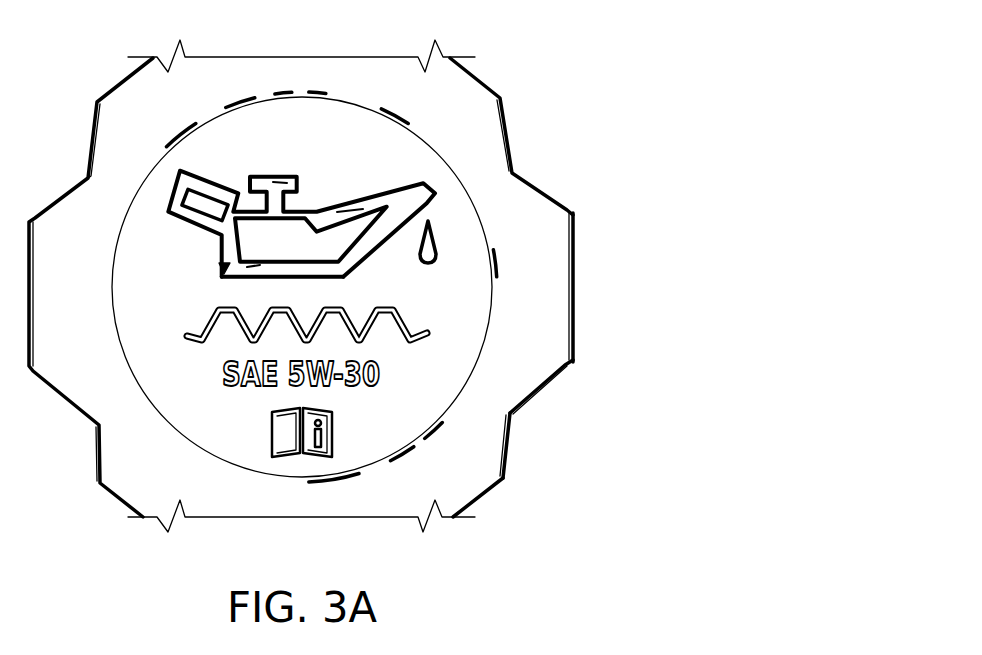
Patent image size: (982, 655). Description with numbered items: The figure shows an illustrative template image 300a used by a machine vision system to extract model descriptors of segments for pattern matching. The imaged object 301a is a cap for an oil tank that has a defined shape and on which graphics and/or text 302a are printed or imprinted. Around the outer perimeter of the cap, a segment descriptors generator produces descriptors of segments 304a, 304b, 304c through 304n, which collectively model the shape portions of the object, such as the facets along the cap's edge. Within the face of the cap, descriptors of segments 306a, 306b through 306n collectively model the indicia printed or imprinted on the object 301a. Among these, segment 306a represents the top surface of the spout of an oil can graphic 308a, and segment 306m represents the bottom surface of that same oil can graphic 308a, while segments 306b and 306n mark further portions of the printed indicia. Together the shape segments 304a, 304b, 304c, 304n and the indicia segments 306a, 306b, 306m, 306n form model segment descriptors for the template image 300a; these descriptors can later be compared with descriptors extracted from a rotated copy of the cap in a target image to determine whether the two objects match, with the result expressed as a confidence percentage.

The template image 300a is at (330, 21).
The object 301a is at (210, 67).
The graphics and/or text 302a is at (150, 447).
The segment 304a is at (508, 443).
The segment 304b is at (537, 386).
The segment 304c is at (575, 349).
The segment 304n is at (490, 492).
The segment 306a is at (363, 203).
The segment 306b is at (176, 201).
The segment 306m is at (251, 281).
The segment 306n is at (333, 479).
The oil can graphic 308a is at (152, 168).